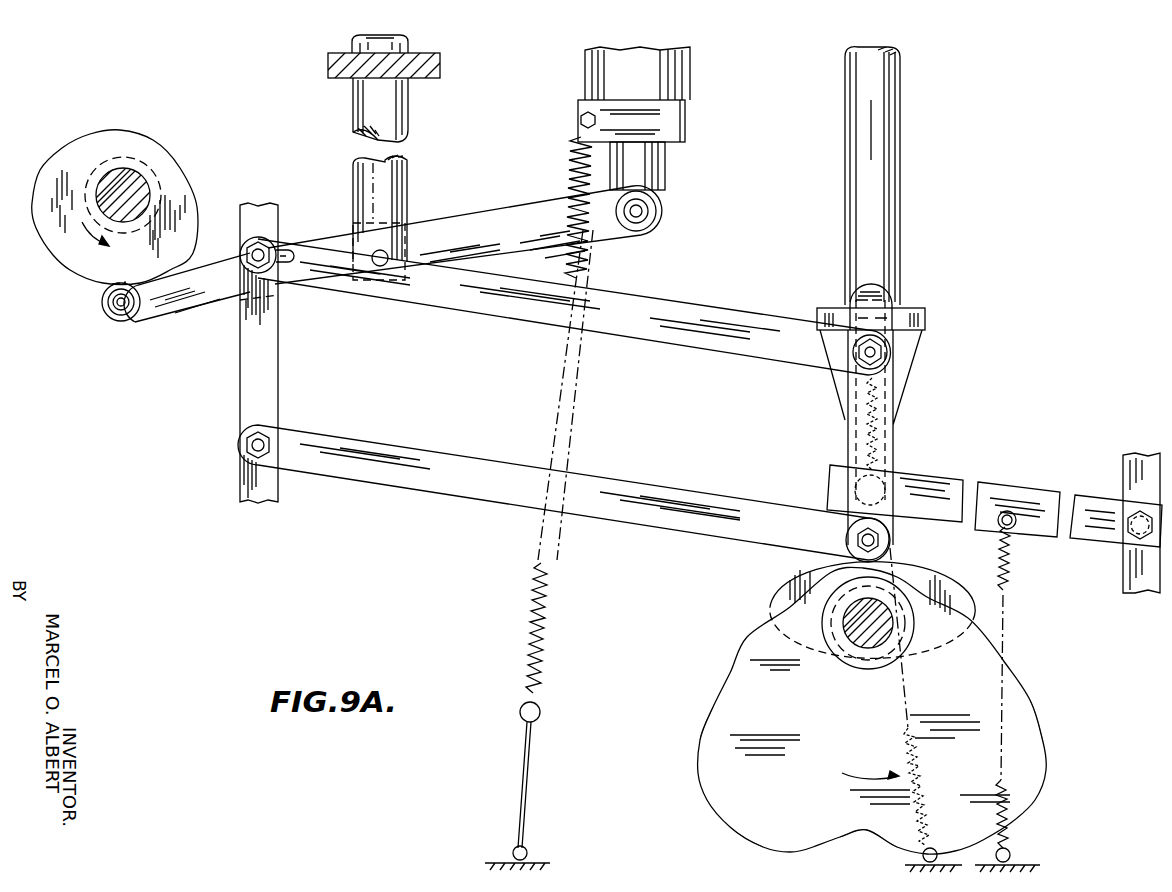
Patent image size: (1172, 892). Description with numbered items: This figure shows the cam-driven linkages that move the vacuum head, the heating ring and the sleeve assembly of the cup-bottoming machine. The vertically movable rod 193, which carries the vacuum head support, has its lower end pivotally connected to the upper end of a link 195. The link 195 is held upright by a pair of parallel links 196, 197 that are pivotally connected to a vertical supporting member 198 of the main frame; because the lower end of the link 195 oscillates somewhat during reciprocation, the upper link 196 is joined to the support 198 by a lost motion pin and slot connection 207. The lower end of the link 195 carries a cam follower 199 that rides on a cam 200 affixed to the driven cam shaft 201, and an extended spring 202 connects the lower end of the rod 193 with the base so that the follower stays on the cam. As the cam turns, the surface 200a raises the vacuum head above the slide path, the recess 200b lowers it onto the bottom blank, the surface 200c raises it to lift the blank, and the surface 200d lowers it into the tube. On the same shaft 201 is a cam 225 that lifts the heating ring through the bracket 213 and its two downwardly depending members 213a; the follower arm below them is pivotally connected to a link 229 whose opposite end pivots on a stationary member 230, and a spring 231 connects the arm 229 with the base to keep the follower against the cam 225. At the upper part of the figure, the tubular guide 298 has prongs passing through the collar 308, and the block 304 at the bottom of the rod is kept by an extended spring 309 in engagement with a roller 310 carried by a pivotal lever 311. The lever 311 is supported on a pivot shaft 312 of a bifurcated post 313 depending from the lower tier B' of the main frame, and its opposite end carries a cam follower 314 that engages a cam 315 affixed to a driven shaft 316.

The vertically movable rod 193 is at (899, 180).
The link 195 is at (888, 517).
The upper parallel link 196 is at (657, 336).
The lower parallel link 197 is at (642, 488).
The vertical supporting member 198 is at (277, 347).
The cam follower 199 is at (893, 548).
The cam 200 is at (746, 640).
The cam surface 200a is at (1040, 702).
The cam recess 200b is at (868, 832).
The cam surface 200c is at (818, 848).
The cam surface 200d is at (713, 690).
The driven cam shaft 201 is at (868, 645).
The extended spring 202 is at (907, 755).
The lost motion pin and slot connection 207 is at (268, 250).
The bracket 213 is at (919, 317).
The downwardly depending members 213a is at (912, 359).
The cam 225 is at (771, 585).
The link 229 is at (1043, 495).
The stationary member 230 is at (1128, 472).
The spring 231 is at (1012, 583).
The tubular guide 298 is at (690, 84).
The block 304 is at (666, 168).
The collar 308 is at (687, 124).
The extended spring 309 is at (540, 618).
The roller 310 is at (648, 228).
The pivotal lever 311 is at (498, 220).
The pivot shaft 312 is at (385, 254).
The bifurcated post 313 is at (408, 120).
The cam follower 314 is at (112, 322).
The cam 315 is at (45, 240).
The driven shaft 316 is at (134, 184).
The lower tier of the main frame B' is at (396, 57).